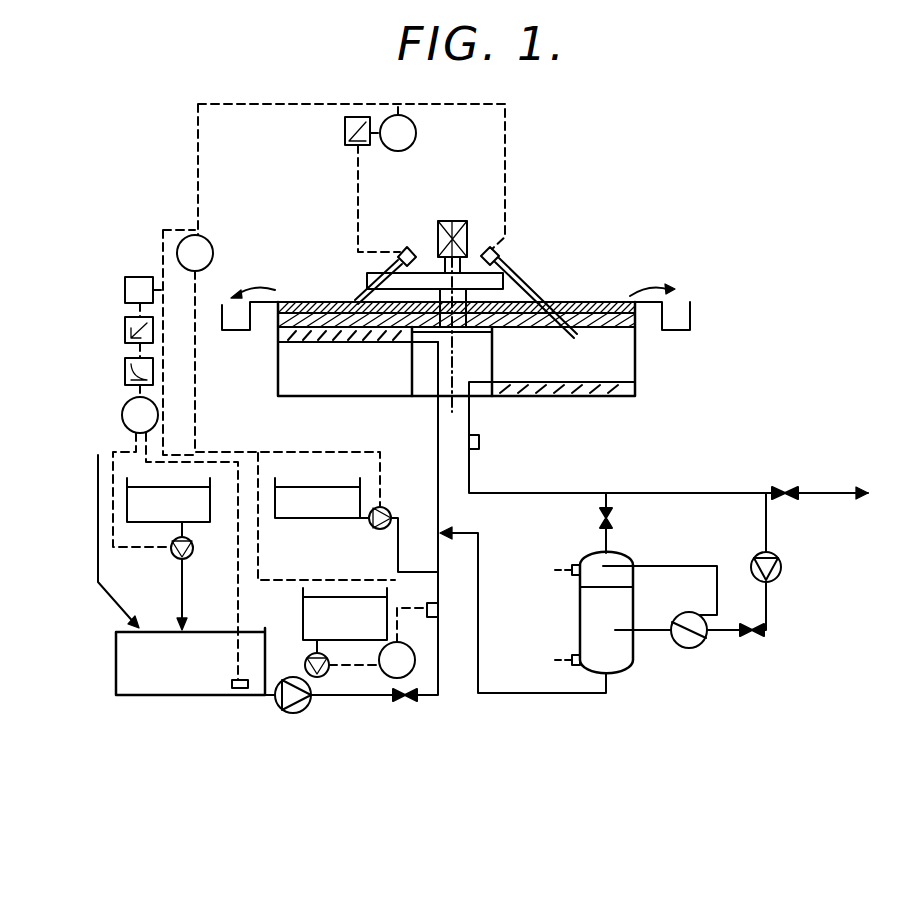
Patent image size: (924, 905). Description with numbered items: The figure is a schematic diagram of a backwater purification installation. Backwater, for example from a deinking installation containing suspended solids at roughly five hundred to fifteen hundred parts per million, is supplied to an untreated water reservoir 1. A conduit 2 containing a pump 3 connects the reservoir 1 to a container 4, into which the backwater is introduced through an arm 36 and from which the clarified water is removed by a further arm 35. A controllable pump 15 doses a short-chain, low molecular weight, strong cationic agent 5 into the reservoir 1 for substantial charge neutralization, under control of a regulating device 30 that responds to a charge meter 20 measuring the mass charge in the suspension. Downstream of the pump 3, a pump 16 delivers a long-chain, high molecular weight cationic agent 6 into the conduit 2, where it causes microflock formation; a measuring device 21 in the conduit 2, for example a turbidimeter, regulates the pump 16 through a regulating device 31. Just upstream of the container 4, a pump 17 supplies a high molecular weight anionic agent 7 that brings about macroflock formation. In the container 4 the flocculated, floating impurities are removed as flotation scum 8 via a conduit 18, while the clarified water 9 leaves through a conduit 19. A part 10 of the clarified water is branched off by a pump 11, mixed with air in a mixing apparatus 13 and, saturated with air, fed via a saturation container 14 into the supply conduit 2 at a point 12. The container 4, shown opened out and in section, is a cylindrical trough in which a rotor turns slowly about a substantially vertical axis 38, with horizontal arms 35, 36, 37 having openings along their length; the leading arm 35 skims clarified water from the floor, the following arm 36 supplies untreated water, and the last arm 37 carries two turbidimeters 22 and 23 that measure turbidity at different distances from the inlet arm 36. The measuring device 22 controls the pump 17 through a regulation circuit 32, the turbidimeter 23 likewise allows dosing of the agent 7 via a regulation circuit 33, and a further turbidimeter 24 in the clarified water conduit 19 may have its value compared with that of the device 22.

The untreated water reservoir 1 is at (190, 661).
The conduit 2 is at (435, 427).
The pump 3 is at (305, 711).
The container 4 is at (478, 361).
The cationic agent 5 is at (168, 500).
The cationic agent 6 is at (345, 614).
The anionic agent 7 is at (317, 498).
The flotation scum 8 is at (605, 304).
The clarified water 9 is at (828, 494).
The part of clarified water 10 is at (768, 515).
The pump 11 is at (781, 567).
The point 12 is at (447, 531).
The mixing apparatus 13 is at (687, 648).
The saturation container 14 is at (594, 583).
The controllable pump 15 is at (193, 552).
The pump 16 is at (306, 660).
The pump 17 is at (388, 510).
The conduit 18 is at (456, 323).
The conduit 19 is at (478, 418).
The charge meter 20 is at (238, 697).
The measuring device 21 is at (439, 612).
The measuring device 22 is at (499, 256).
The turbidimeter 23 is at (409, 248).
The turbidimeter 24 is at (480, 444).
The regulating device 30 is at (140, 355).
The regulating device 31 is at (403, 643).
The regulation circuit 32 is at (195, 253).
The regulation circuit 33 is at (380, 133).
The arm 35 is at (599, 381).
The arm 36 is at (343, 345).
The arm 37 is at (514, 283).
The vertical axis 38 is at (455, 355).